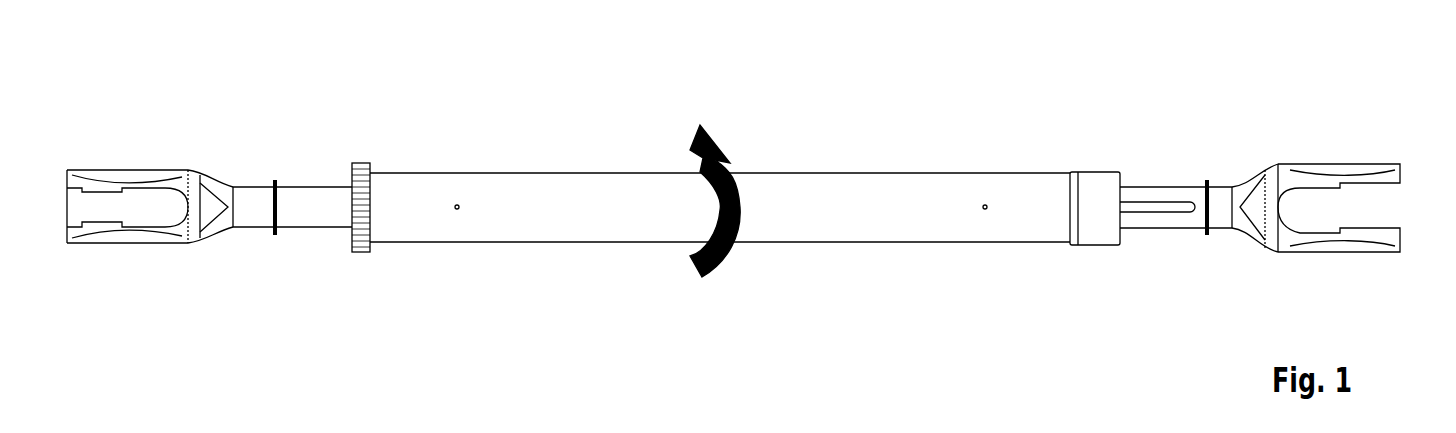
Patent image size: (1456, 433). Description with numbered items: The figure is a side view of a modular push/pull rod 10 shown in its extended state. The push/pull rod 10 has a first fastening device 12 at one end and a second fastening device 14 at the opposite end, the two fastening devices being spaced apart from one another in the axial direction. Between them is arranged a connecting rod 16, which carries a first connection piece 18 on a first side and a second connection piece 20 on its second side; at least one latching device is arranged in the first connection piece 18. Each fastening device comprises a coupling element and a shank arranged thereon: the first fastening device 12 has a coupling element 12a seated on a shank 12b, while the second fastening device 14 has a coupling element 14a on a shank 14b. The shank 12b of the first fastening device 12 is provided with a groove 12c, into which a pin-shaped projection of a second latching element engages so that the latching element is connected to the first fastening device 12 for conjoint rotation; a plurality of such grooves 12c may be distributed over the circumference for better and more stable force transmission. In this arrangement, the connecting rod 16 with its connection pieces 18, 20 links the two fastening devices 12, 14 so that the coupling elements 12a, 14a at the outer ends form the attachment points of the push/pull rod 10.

The push/pull rod 10 is at (984, 316).
The first fastening device 12 is at (1260, 162).
The coupling element 12a is at (1390, 165).
The shank 12b is at (1186, 195).
The groove 12c is at (1163, 212).
The second fastening device 14 is at (186, 162).
The coupling element 14a is at (93, 170).
The shank 14b is at (315, 202).
The connecting rod 16 is at (932, 190).
The first connection piece 18 is at (1106, 180).
The second connection piece 20 is at (357, 163).